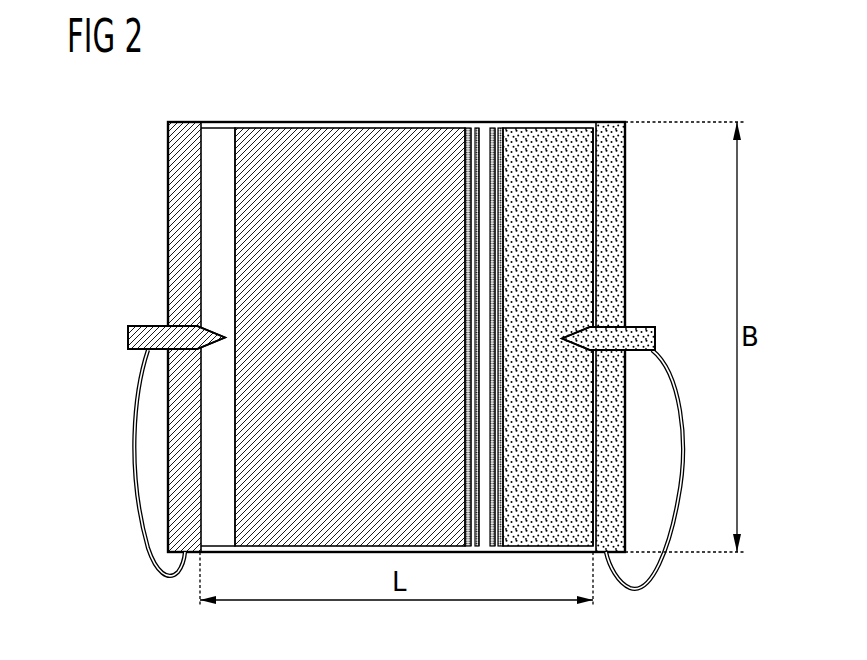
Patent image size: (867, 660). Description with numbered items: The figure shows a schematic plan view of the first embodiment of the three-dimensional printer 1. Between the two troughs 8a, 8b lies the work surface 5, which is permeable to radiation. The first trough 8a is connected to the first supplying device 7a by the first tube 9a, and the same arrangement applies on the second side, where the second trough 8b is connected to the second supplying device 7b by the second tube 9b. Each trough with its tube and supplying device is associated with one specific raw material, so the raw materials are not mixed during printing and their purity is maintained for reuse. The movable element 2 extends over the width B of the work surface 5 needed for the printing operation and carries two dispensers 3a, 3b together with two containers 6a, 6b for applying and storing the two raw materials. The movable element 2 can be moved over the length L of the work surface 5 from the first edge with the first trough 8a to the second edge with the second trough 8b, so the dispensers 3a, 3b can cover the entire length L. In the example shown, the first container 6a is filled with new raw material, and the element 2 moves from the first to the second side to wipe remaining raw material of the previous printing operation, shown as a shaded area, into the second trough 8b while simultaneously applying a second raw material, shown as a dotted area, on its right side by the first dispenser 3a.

The 3D printer 1 is at (110, 136).
The movable element 2 is at (516, 139).
The first dispenser 3a is at (511, 293).
The second dispenser 3b is at (463, 293).
The work surface 5 is at (219, 128).
The first container 6a is at (501, 130).
The second container 6b is at (471, 130).
The first supplying device 7a is at (653, 316).
The second supplying device 7b is at (134, 320).
The first trough 8a is at (613, 210).
The second trough 8b is at (173, 222).
The first tube 9a is at (672, 487).
The second tube 9b is at (133, 458).